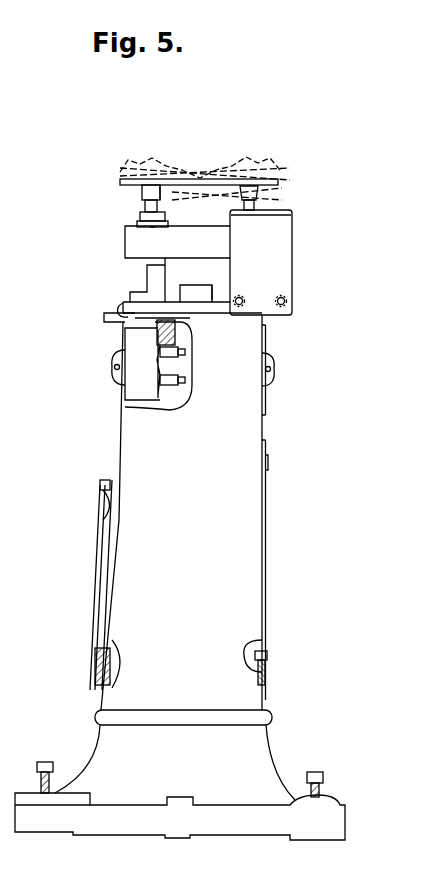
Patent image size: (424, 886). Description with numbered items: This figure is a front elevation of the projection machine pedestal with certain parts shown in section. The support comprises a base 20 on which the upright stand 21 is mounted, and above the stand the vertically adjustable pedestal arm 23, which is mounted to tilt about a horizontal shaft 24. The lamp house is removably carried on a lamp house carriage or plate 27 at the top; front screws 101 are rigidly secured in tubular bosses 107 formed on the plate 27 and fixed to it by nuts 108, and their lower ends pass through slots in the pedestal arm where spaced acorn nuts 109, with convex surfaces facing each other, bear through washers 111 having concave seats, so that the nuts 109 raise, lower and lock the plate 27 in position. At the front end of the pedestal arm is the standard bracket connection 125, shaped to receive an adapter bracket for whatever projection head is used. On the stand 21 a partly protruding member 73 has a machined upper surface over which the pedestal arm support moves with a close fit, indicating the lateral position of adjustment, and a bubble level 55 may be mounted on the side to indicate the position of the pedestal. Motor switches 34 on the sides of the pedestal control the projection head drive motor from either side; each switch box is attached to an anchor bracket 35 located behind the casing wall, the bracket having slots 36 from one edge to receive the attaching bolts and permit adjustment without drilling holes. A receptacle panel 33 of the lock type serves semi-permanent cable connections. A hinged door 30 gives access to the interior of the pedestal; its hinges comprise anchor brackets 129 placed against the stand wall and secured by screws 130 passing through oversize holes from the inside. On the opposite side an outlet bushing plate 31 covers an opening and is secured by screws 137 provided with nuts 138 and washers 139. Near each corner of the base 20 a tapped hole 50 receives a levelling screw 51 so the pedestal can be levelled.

The base 20 is at (100, 738).
The stand 21 is at (246, 613).
The pedestal arm 23 is at (131, 250).
The horizontal shaft 24 is at (147, 283).
The lamp house carriage or plate 27 is at (205, 179).
The hinged door or closure 30 is at (108, 548).
The outlet bushing plate 31 is at (266, 578).
The receptacle panel 33 is at (268, 463).
The motor switches 34 is at (113, 368).
The anchor bracket 35 is at (176, 338).
The slots 36 is at (171, 372).
The tapped hole 50 is at (38, 790).
The levelling screws 51 is at (45, 762).
The bubble level 55 is at (105, 318).
The partly protruding member 73 is at (120, 306).
The front screws 101 is at (146, 207).
The tubular projections or bosses 107 is at (142, 194).
The nuts 108 is at (161, 202).
The acorn nuts 109 is at (139, 223).
The washers 111 is at (157, 228).
The standard bracket connection 125 is at (261, 262).
The anchor brackets 129 is at (97, 660).
The screws 130 is at (118, 664).
The screws 137 is at (268, 655).
The nuts 138 is at (250, 660).
The washers 139 is at (258, 676).